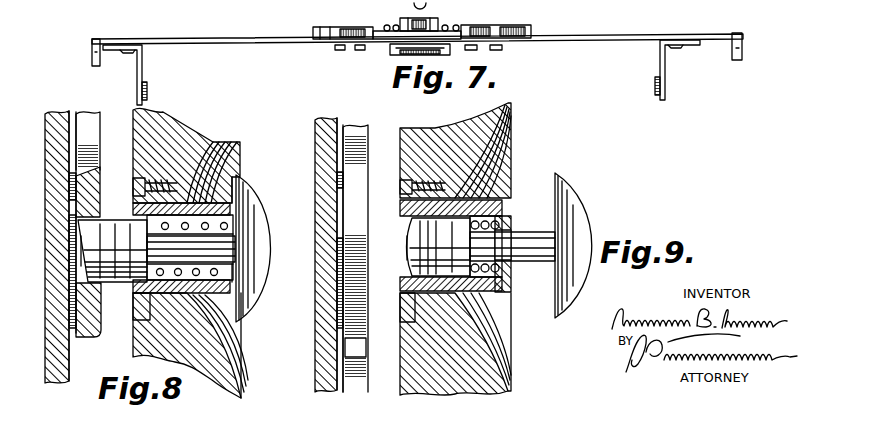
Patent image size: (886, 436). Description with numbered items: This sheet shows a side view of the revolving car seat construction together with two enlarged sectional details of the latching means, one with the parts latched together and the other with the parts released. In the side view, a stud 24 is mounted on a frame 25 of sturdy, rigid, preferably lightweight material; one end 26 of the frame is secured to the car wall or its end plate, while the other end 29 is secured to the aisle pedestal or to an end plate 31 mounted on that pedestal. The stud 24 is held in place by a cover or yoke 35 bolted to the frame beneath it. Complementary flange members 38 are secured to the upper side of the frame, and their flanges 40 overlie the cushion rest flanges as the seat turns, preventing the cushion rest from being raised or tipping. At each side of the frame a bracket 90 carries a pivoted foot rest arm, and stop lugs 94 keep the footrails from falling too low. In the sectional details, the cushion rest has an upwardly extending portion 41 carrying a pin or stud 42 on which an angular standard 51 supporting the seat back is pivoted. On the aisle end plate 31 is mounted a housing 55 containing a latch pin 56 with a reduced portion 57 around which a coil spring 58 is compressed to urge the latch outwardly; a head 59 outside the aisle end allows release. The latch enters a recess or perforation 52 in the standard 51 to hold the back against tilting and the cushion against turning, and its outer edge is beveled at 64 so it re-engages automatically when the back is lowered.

In FIG. 7, the stud 24 is at (394, 28).
In FIG. 7, the frame 25 is at (556, 36).
In FIG. 7, the end of frame 26 is at (91, 54).
In FIG. 7, the end of frame 29 is at (743, 50).
In FIG. 8, the end plate 31 is at (190, 138).
In FIG. 9, the end plate 31 is at (512, 114).
In FIG. 7, the cover or yoke 35 is at (392, 50).
In FIG. 7, the flange member 38 is at (530, 26).
In FIG. 7, the flange 40 is at (334, 27).
In FIG. 8, the upwardly extending portion 41 is at (62, 368).
In FIG. 9, the upwardly extending portion 41 is at (325, 118).
In FIG. 8, the pin or stud 42 is at (72, 200).
In FIG. 9, the pin or stud 42 is at (340, 252).
In FIG. 8, the angular standard 51 is at (90, 125).
In FIG. 9, the angular standard 51 is at (366, 122).
In FIG. 8, the recess or perforation 52 is at (80, 282).
In FIG. 8, the housing 55 is at (200, 196).
In FIG. 9, the housing 55 is at (502, 202).
In FIG. 8, the latch pin 56 is at (112, 223).
In FIG. 9, the latch pin 56 is at (408, 238).
In FIG. 8, the reduced portion 57 is at (232, 260).
In FIG. 9, the reduced portion 57 is at (538, 262).
In FIG. 8, the coil spring 58 is at (228, 220).
In FIG. 9, the coil spring 58 is at (505, 218).
In FIG. 8, the head 59 is at (261, 247).
In FIG. 9, the head 59 is at (585, 207).
In FIG. 8, the bevel 64 is at (81, 251).
In FIG. 9, the bevel 64 is at (407, 256).
In FIG. 7, the bracket 90 is at (143, 58).
In FIG. 7, the stop lug 94 is at (148, 86).